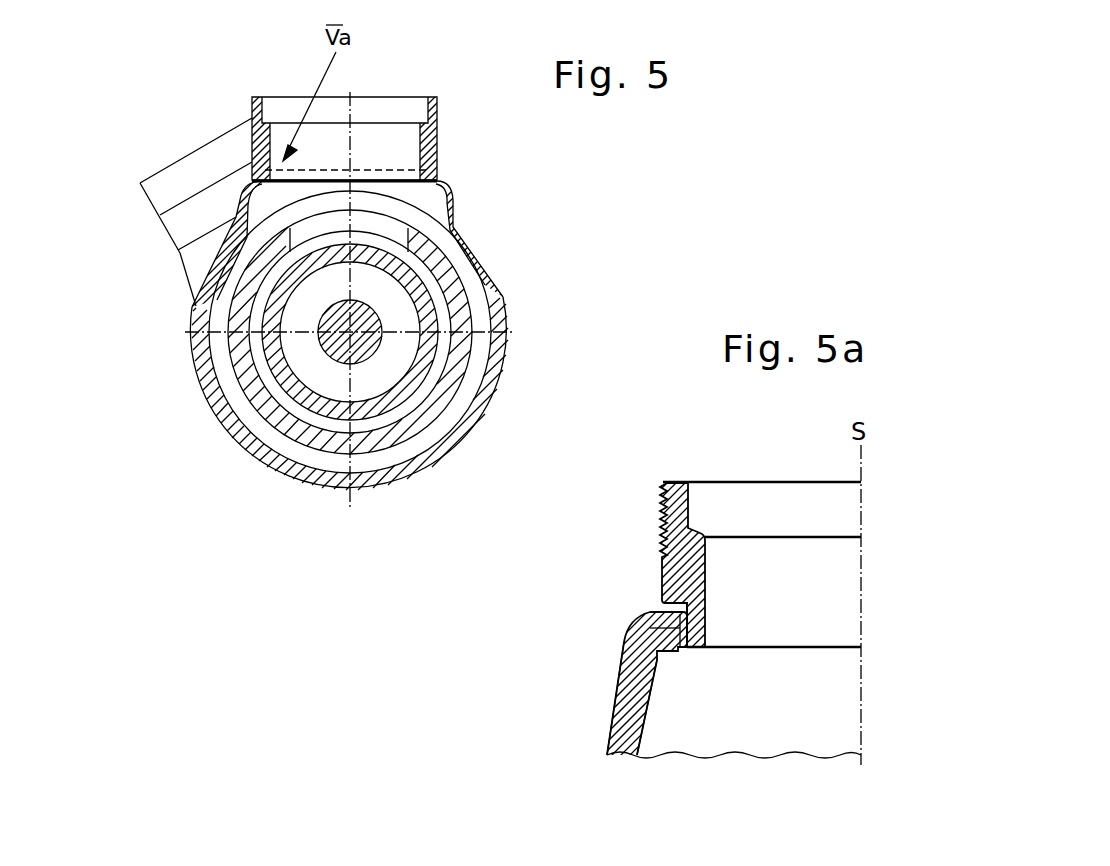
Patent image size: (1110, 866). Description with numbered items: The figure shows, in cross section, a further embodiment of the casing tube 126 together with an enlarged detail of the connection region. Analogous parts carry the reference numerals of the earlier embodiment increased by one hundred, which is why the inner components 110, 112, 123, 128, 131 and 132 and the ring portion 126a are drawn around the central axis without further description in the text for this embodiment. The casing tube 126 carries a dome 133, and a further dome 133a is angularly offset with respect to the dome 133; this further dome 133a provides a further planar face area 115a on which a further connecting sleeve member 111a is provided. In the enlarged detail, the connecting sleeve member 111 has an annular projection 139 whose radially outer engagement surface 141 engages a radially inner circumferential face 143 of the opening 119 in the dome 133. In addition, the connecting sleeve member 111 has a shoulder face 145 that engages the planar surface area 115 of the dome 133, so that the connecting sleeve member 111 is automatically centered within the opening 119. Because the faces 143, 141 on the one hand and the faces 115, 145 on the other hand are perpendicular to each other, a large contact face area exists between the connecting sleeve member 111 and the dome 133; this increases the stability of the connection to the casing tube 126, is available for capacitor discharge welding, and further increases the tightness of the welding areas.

In FIG. 5, the inner ring 110 is at (455, 378).
In FIG. 5, the connecting sleeve member 111 is at (437, 153).
In FIG. 5A, the connecting sleeve member 111 is at (678, 482).
In FIG. 5, the further connecting sleeve member 111a is at (172, 233).
In FIG. 5, the central shaft 112 is at (337, 348).
In FIG. 5, the planar surface area 115 is at (360, 168).
In FIG. 5A, the planar surface area 115 is at (673, 618).
In FIG. 5, the further planar face area 115a is at (205, 228).
In FIG. 5, the opening 119 is at (395, 178).
In FIG. 5A, the opening 119 is at (684, 650).
In FIG. 5, the bearing ring 123 is at (460, 372).
In FIG. 5, the casing tube 126 is at (497, 300).
In FIG. 5, the outer housing ring portion 126a is at (478, 253).
In FIG. 5, the intermediate ring 128 is at (297, 447).
In FIG. 5, the housing wall 131 is at (400, 228).
In FIG. 5, the inner hatched ring 132 is at (293, 397).
In FIG. 5, the dome 133 is at (458, 200).
In FIG. 5A, the dome 133 is at (622, 724).
In FIG. 5, the further dome 133a is at (170, 275).
In FIG. 5A, the annular projection 139 is at (695, 649).
In FIG. 5A, the radially outer engagement surface 141 is at (697, 622).
In FIG. 5A, the radially inner circumferential face 143 is at (675, 633).
In FIG. 5A, the shoulder face 145 is at (660, 577).